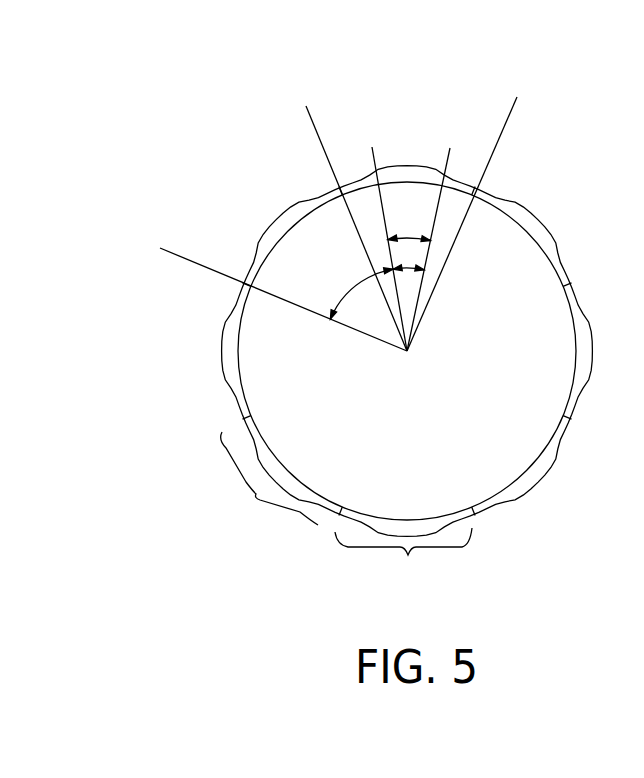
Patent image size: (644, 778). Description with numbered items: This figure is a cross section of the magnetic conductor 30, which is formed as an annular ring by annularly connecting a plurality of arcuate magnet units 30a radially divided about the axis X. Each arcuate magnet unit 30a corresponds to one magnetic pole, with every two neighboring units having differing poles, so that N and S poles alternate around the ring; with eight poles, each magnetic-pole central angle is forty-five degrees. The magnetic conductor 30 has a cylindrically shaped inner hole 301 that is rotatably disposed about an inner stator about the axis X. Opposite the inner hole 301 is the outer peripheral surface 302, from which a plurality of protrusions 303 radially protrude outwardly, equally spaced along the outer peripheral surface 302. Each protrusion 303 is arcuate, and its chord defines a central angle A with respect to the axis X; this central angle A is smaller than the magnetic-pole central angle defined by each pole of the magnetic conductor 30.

The magnetic conductor 30 is at (353, 178).
The arcuate magnet unit 30a is at (336, 516).
The inner hole 301 is at (557, 447).
The outer peripheral surface 302 is at (247, 265).
The protrusion 303 is at (282, 212).
The central angle A is at (410, 232).
The axis X is at (408, 352).